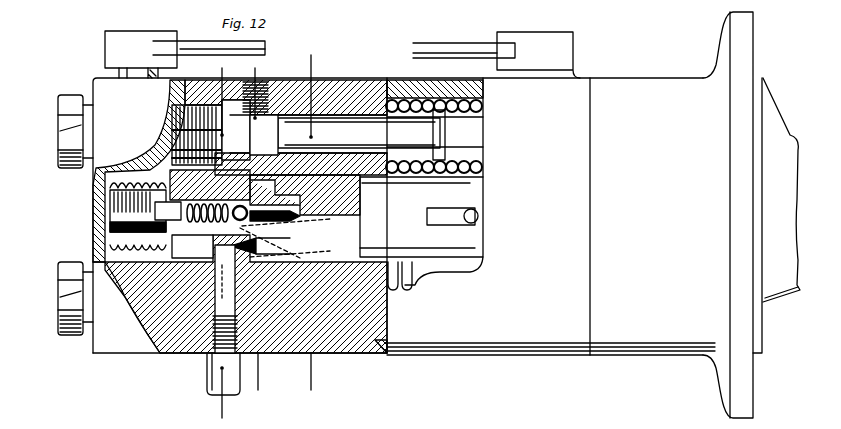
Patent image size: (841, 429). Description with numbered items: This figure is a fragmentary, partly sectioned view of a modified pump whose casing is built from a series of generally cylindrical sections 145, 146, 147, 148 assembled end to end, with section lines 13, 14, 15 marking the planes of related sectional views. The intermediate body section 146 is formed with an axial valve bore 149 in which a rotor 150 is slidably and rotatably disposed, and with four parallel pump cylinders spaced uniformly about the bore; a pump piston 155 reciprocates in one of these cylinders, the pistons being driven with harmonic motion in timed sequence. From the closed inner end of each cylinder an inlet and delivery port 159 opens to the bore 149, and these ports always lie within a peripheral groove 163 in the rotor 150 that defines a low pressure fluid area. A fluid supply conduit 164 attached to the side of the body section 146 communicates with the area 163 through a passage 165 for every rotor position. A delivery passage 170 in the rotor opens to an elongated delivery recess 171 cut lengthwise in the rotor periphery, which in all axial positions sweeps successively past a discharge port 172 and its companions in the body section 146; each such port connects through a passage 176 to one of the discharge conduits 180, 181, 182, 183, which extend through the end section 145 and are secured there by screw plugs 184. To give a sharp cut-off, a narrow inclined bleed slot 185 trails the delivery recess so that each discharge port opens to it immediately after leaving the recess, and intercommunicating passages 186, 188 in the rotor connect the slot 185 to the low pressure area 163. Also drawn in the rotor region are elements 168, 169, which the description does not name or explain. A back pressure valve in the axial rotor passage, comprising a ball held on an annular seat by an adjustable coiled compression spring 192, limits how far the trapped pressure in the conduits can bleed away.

The section line 13— 13 is at (234, 68).
The section line 14— 14 is at (255, 68).
The section line 15— 15 is at (311, 55).
The end casing section 145 is at (118, 355).
The intermediate body section 146 is at (372, 355).
The casing section 147 is at (552, 330).
The casing section 148 is at (676, 338).
The axial valve bore 149 is at (357, 247).
The rotor 150 is at (354, 221).
The pump piston 155 is at (330, 124).
The inlet and delivery port 159 is at (250, 166).
The peripheral groove 163 is at (251, 283).
The fluid supply conduit 164 is at (207, 371).
The passage 165 is at (206, 312).
The coil spring 168 is at (217, 200).
The check valve 169 is at (262, 262).
The delivery passage 170 is at (300, 187).
The delivery recess 171 is at (300, 254).
The discharge port 172 is at (345, 276).
The passage 176 is at (270, 313).
The discharge conduit 180 is at (50, 305).
The discharge conduit 181 is at (50, 290).
The discharge conduit 182 is at (145, 216).
The discharge conduit 183 is at (35, 145).
The screw plug 184 is at (78, 94).
The bleed slot 185 is at (262, 241).
The passage 186 is at (300, 220).
The passage 188 is at (210, 185).
The coiled compression spring 192 is at (192, 246).